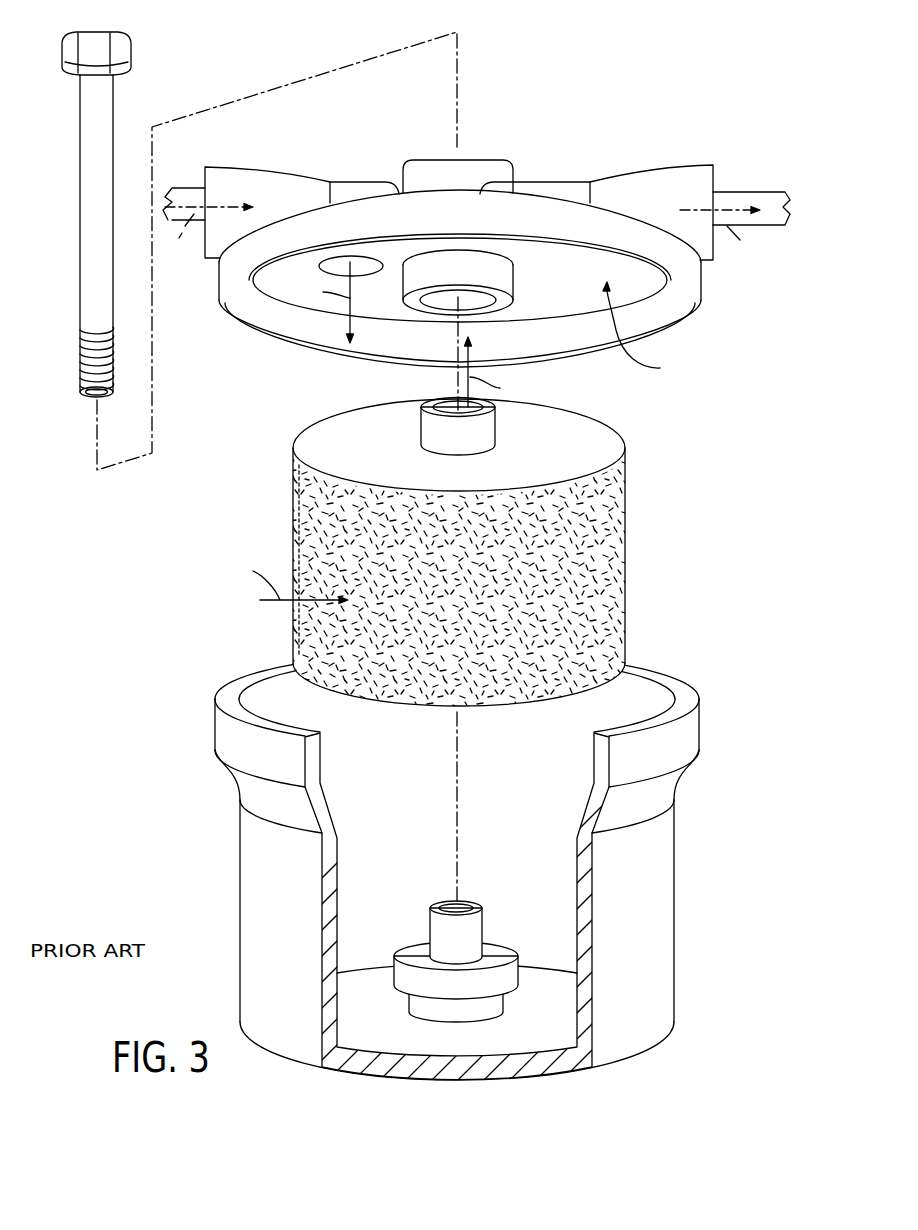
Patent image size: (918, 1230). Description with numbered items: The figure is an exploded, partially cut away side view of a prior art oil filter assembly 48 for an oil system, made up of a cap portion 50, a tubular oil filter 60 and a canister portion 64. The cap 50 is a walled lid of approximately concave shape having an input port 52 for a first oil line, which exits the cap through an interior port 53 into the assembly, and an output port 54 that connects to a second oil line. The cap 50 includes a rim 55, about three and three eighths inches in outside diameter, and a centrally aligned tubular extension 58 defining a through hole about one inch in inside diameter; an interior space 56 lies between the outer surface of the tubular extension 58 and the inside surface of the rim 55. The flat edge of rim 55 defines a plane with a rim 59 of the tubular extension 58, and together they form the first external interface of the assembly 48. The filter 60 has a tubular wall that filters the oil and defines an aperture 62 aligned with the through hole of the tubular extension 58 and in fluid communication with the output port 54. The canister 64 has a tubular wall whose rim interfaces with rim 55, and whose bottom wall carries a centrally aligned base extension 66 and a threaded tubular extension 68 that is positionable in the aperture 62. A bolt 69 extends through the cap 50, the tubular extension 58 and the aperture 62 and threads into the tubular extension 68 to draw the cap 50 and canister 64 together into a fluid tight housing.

The oil filter assembly 48 is at (500, 91).
The cap portion 50 is at (476, 263).
The input port 52 is at (204, 197).
The port 53 is at (323, 267).
The output port 54 is at (715, 192).
The rim 55 is at (692, 305).
The interior space 56 is at (646, 332).
The tubular extension 58 is at (506, 324).
The rim 59 is at (507, 305).
The tubular oil filter 60 is at (462, 540).
The aperture 62 is at (431, 396).
The canister portion 64 is at (509, 876).
The base extension 66 is at (517, 963).
The tubular extension 68 is at (430, 925).
The bolt 69 is at (107, 32).